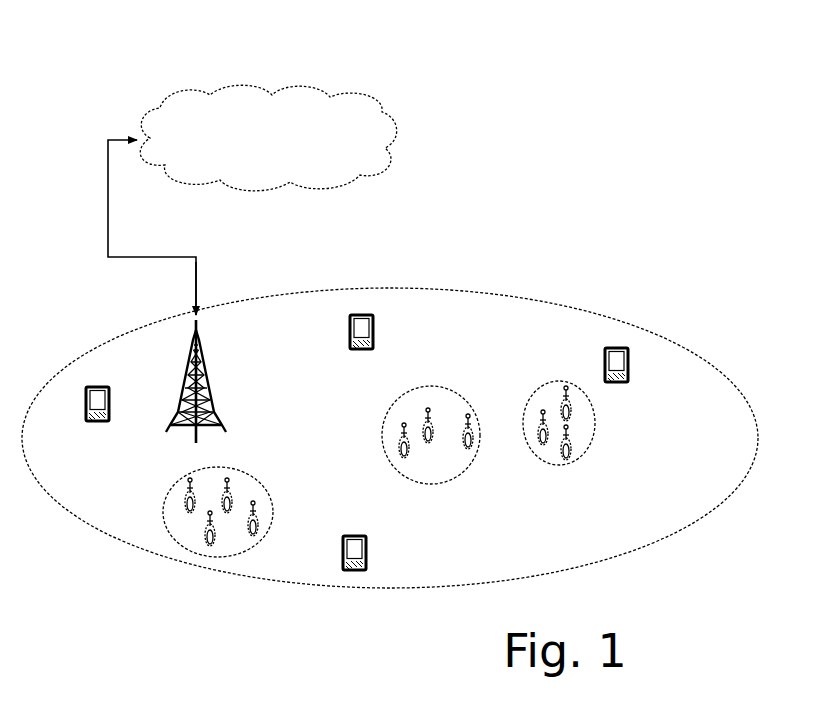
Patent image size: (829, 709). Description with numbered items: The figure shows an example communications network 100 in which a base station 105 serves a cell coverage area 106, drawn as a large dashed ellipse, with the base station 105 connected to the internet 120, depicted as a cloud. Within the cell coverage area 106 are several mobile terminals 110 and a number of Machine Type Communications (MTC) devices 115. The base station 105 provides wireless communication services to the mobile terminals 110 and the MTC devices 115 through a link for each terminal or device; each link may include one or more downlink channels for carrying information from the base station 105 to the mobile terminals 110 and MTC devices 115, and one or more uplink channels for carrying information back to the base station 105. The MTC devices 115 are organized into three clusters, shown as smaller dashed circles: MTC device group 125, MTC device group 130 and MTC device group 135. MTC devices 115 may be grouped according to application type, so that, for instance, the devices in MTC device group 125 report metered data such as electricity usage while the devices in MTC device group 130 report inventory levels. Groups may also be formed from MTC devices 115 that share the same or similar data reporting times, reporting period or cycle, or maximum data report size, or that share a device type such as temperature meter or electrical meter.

The communications network 100 is at (522, 90).
The base station 105 is at (199, 322).
The cell coverage area 106 is at (705, 352).
The mobile terminals 110 is at (374, 322).
The Machine Type Communications (MTC) devices 115 is at (404, 428).
The internet 120 is at (273, 87).
The MTC device group 125 is at (592, 447).
The MTC device group 130 is at (433, 483).
The MTC device group 135 is at (163, 517).